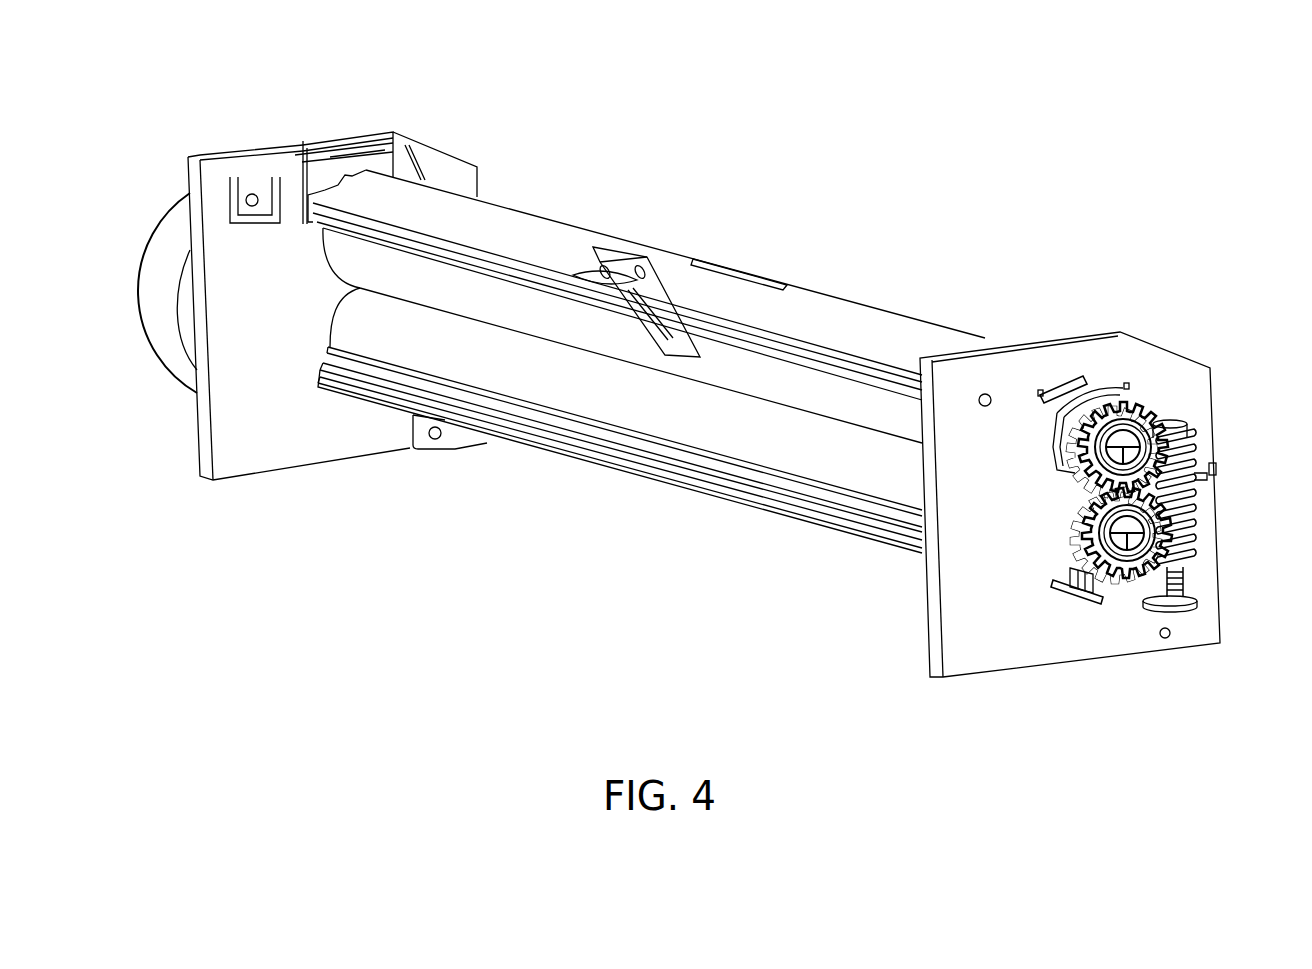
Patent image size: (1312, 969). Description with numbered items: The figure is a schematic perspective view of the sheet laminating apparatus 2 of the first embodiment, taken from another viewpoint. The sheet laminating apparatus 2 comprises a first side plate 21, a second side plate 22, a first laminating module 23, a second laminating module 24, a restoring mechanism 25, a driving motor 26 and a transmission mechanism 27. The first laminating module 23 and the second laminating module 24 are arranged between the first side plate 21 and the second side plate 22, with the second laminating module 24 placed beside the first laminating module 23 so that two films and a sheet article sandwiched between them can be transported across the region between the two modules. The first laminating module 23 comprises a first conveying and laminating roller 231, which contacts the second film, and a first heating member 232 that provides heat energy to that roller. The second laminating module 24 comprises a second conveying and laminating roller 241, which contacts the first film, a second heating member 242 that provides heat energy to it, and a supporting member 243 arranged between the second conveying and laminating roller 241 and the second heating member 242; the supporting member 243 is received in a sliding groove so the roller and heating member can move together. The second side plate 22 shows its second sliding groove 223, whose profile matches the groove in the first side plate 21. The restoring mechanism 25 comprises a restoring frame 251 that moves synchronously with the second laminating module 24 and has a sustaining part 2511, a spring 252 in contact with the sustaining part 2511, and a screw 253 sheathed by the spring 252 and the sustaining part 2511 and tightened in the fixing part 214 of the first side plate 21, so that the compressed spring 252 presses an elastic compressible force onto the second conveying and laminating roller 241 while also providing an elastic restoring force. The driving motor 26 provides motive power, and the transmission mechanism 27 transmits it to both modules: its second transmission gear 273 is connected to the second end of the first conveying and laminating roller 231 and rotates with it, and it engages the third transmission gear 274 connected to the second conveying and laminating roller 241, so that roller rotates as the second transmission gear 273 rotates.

The sheet laminating apparatus 2 is at (1203, 126).
The first side plate 21 is at (958, 582).
The second side plate 22 is at (250, 170).
The second sliding groove 223 is at (343, 142).
The supporting member 243 is at (370, 160).
The driving motor 26 is at (163, 243).
The second laminating module 24 is at (646, 306).
The second conveying and laminating roller 241 is at (757, 372).
The second heating member 242 is at (880, 320).
The first laminating module 23 is at (620, 450).
The first conveying and laminating roller 231 is at (578, 400).
The first heating member 232 is at (620, 455).
The restoring mechanism 25 is at (1196, 380).
The restoring frame 251 is at (1094, 388).
The sustaining part 2511 is at (1197, 563).
The spring 252 is at (1192, 492).
The screw 253 is at (1189, 439).
The fixing part 214 is at (1198, 604).
The transmission mechanism 27 is at (1152, 497).
The second transmission gear 273 is at (1098, 634).
The third transmission gear 274 is at (1068, 388).